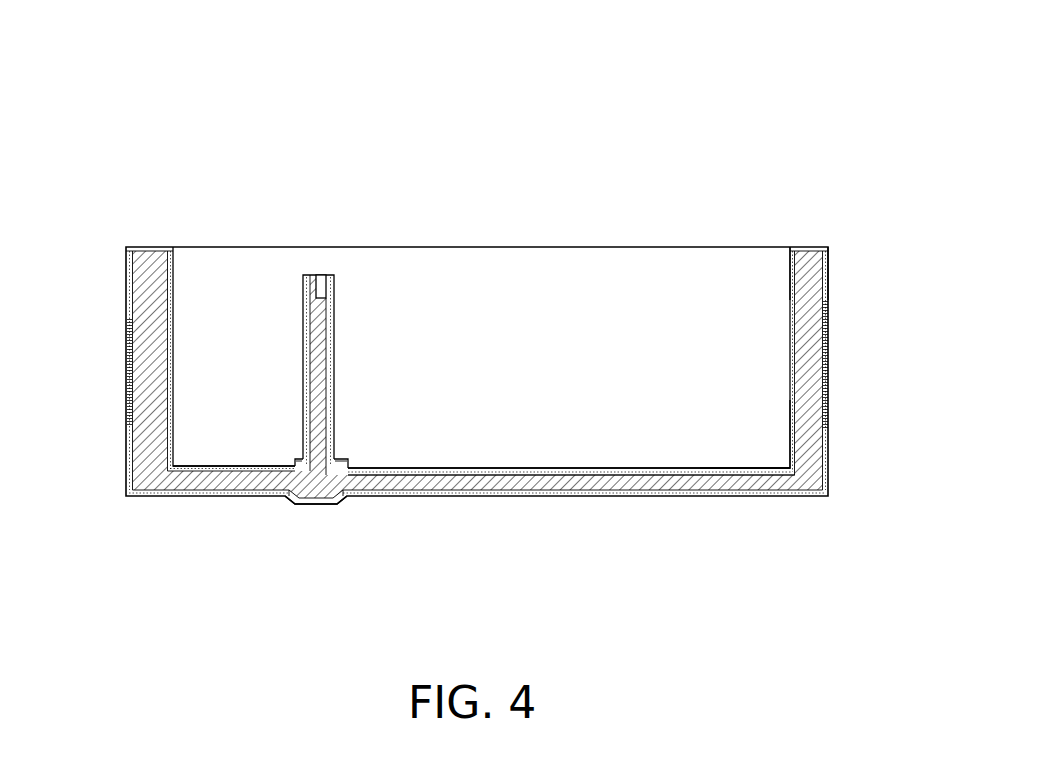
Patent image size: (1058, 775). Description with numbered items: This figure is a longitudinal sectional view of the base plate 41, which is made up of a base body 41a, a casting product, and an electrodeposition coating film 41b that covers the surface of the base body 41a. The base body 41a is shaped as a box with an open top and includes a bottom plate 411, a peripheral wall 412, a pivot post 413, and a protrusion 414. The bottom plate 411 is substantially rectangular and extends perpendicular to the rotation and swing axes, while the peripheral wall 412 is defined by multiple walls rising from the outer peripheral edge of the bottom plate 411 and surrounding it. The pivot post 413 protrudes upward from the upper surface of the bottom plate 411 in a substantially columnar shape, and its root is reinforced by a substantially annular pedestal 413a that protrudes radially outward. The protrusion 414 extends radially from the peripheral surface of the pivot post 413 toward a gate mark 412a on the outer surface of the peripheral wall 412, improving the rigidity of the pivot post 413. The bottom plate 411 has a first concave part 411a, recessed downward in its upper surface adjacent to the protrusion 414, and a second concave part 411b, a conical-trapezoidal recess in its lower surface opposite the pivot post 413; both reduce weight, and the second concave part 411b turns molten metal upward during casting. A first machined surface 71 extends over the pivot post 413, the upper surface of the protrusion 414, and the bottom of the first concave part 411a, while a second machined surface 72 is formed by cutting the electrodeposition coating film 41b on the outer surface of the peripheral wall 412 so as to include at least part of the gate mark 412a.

The base plate 41 is at (830, 168).
The base body 41a is at (827, 281).
The electrodeposition coating film 41b is at (732, 472).
The bottom plate 411 is at (588, 470).
The first concave part 411a is at (390, 469).
The second concave part 411b is at (323, 494).
The peripheral wall 412 is at (135, 357).
The gate mark 412a is at (833, 357).
The pivot post 413 is at (306, 356).
The pedestal 413a is at (295, 463).
The protrusion 414 is at (347, 463).
The first machined surface 71 is at (304, 297).
The second machined surface 72 is at (127, 340).